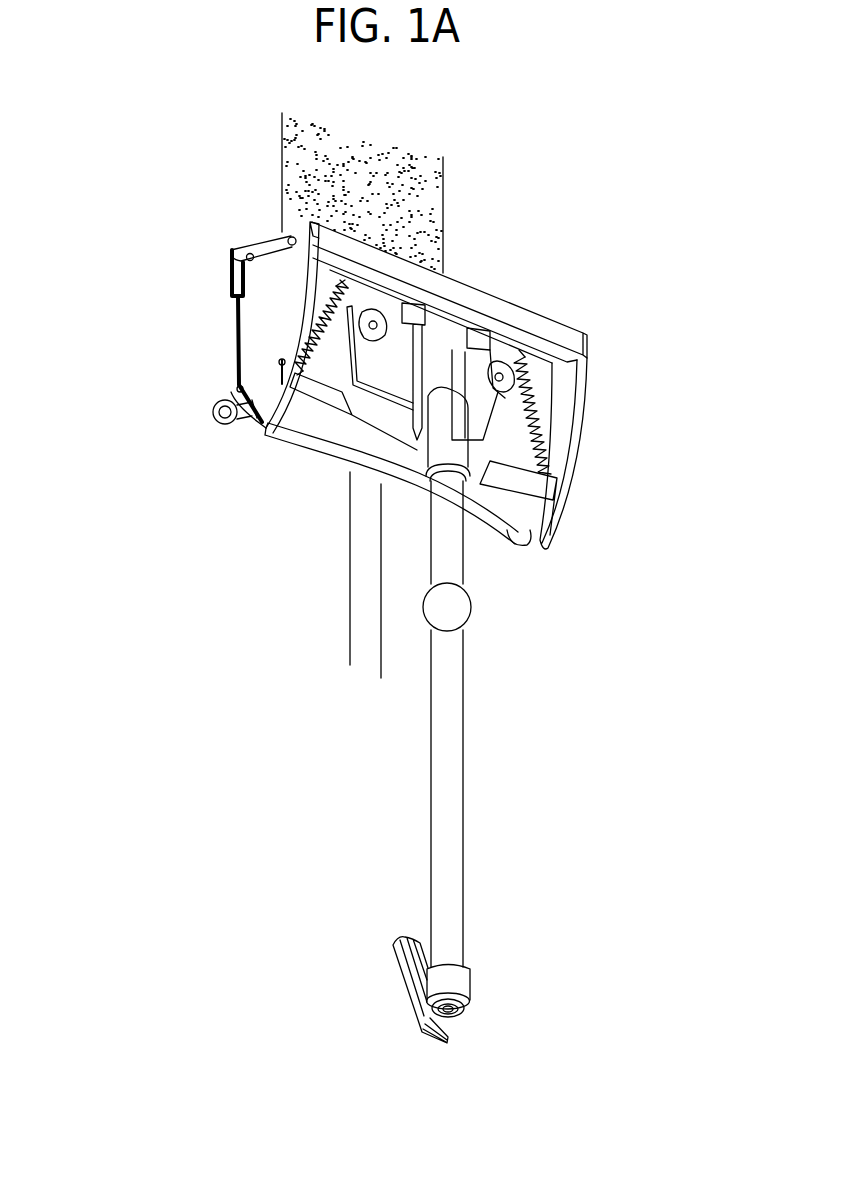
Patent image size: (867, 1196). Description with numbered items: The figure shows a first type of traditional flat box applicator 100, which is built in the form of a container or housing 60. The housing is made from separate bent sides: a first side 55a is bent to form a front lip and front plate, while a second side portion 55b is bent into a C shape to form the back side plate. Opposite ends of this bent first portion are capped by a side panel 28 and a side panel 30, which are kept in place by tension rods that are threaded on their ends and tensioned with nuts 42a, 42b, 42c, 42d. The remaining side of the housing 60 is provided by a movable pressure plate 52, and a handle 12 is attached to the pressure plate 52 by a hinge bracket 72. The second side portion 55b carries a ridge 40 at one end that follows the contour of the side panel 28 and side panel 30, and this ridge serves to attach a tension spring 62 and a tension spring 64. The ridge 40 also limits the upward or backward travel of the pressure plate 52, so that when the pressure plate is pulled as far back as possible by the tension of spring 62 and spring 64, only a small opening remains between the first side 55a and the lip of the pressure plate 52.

The flat box applicator 100 is at (190, 240).
The handle 12 is at (455, 753).
The side panel 28 is at (240, 338).
The side panel 30 is at (567, 412).
The ridge 40 is at (547, 488).
The nut 42a is at (232, 258).
The nut 42b is at (290, 236).
The nut 42c is at (278, 382).
The nut 42d is at (244, 420).
The pressure plate 52 is at (495, 450).
The first side 55a is at (532, 322).
The second side portion 55b is at (540, 512).
The container or housing 60 is at (263, 427).
The tension spring 62 is at (383, 300).
The tension spring 64 is at (540, 400).
The hinge bracket 72 is at (390, 385).